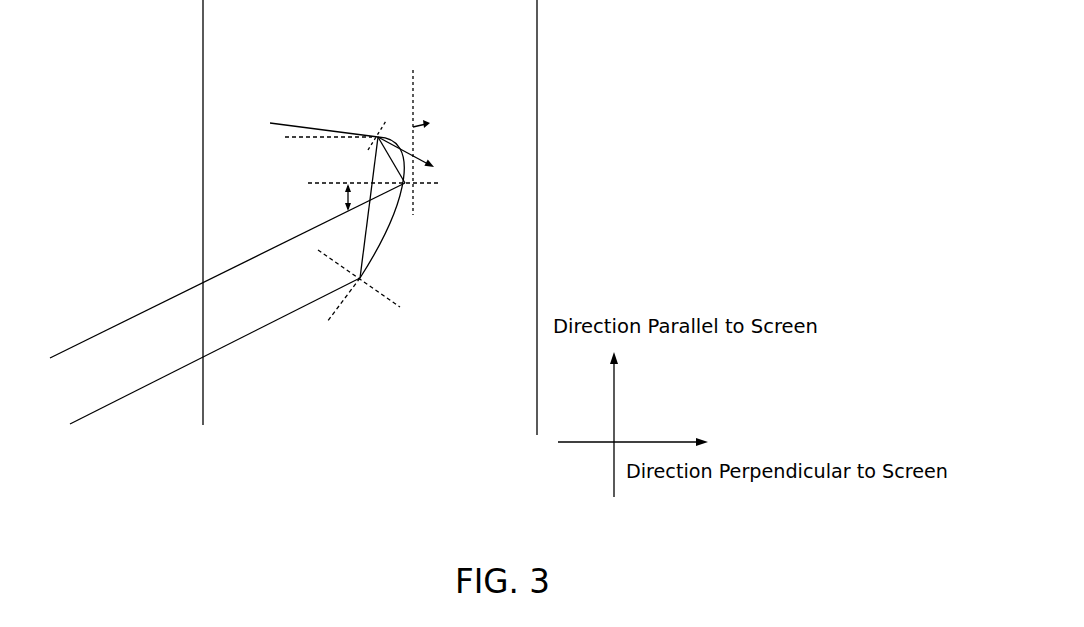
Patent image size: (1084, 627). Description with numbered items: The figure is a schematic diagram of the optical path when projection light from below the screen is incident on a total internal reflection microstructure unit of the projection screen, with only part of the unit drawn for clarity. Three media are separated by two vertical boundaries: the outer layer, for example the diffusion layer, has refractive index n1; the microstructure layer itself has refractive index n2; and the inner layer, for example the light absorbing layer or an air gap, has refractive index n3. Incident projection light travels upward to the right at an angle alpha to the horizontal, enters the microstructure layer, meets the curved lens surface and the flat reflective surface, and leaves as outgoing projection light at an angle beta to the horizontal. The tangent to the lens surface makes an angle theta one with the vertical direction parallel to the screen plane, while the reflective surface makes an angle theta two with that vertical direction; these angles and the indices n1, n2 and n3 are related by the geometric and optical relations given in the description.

The refractive index of the outer-side layer n1 is at (171, 212).
The refractive index of the microstructure layer n2 is at (405, 217).
The refractive index of the inner-side layer n3 is at (566, 227).